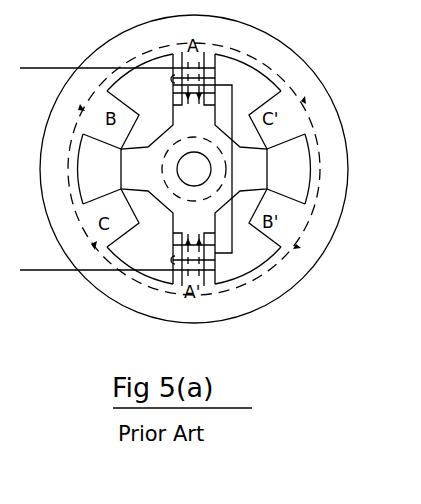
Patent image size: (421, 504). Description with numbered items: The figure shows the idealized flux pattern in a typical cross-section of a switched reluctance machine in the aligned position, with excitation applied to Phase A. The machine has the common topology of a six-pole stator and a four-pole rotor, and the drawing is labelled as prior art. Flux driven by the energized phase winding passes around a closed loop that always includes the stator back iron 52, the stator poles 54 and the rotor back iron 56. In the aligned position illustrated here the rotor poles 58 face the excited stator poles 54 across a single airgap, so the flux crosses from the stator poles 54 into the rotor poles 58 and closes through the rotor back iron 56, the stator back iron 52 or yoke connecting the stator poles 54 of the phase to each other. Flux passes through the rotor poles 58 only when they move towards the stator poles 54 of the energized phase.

The stator back iron 52 is at (273, 50).
The stator poles 54 is at (198, 75).
The rotor back iron 56 is at (218, 166).
The rotor poles 58 is at (172, 125).